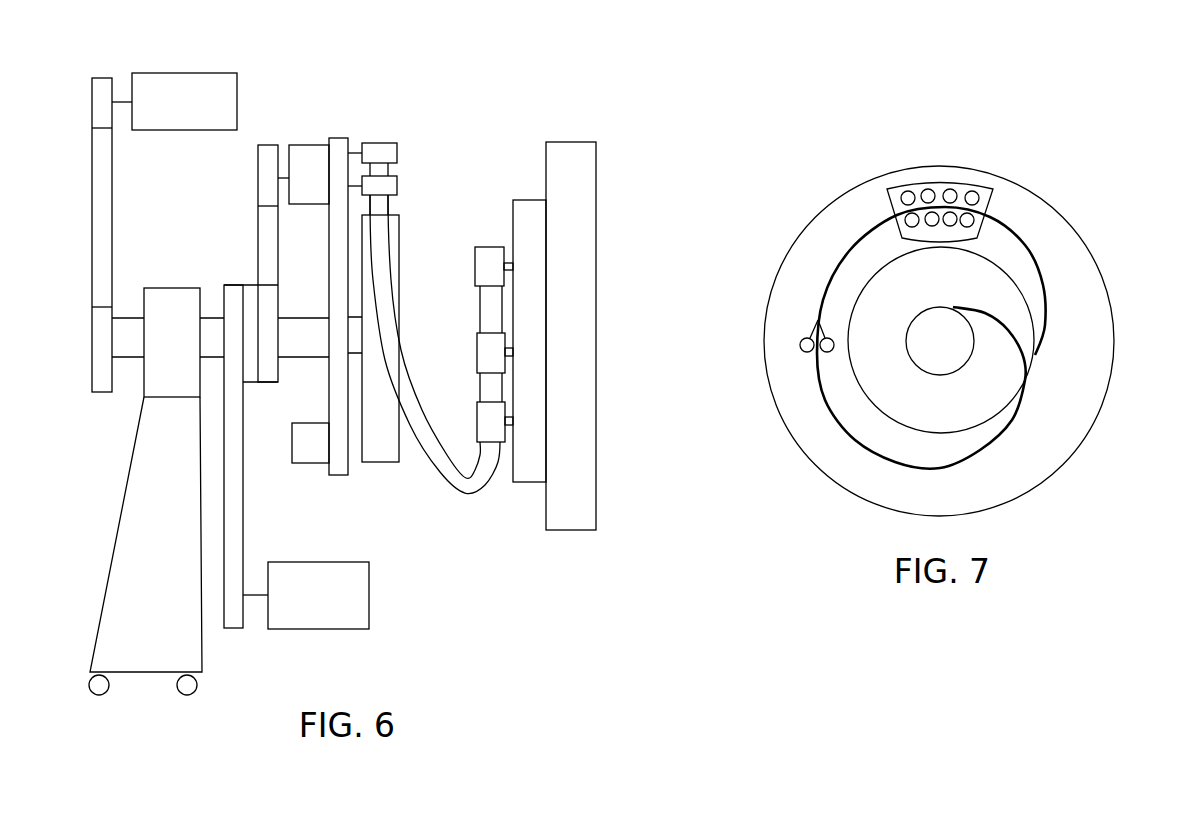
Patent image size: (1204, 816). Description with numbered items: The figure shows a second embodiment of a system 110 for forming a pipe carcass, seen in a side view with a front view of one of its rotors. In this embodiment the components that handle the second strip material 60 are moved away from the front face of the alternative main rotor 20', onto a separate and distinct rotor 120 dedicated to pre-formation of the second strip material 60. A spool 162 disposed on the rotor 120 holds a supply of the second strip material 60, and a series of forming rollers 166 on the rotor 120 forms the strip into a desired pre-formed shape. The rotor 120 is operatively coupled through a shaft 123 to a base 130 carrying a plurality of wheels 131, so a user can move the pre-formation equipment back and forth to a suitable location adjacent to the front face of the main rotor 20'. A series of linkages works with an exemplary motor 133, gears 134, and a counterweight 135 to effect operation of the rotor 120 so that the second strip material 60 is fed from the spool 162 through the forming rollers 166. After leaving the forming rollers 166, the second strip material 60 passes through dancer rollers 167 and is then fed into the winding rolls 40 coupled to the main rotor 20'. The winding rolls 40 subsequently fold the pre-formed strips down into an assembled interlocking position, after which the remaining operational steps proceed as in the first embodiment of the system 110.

In FIG. 6, the system 110 is at (395, 96).
In FIG. 6, the rotor 120 is at (338, 148).
In FIG. 7, the rotor 120 is at (1053, 248).
In FIG. 6, the drive shaft 123 is at (127, 336).
In FIG. 6, the base 130 is at (138, 540).
In FIG. 6, the wheels 131 is at (105, 692).
In FIG. 6, the motor 133 is at (345, 595).
In FIG. 6, the gears 134 is at (303, 158).
In FIG. 6, the counterweight 135 is at (312, 455).
In FIG. 6, the spool 162 is at (382, 447).
In FIG. 7, the spool 162 is at (1010, 322).
In FIG. 6, the forming rollers 166 is at (397, 185).
In FIG. 7, the forming rollers 166 is at (952, 195).
In FIG. 7, the dancer rollers 167 is at (805, 352).
In FIG. 6, the second strip material 60 is at (450, 480).
In FIG. 7, the second strip material 60 is at (857, 242).
In FIG. 6, the winding rolls 40 is at (477, 335).
In FIG. 6, the alternative main rotor 20' is at (552, 336).